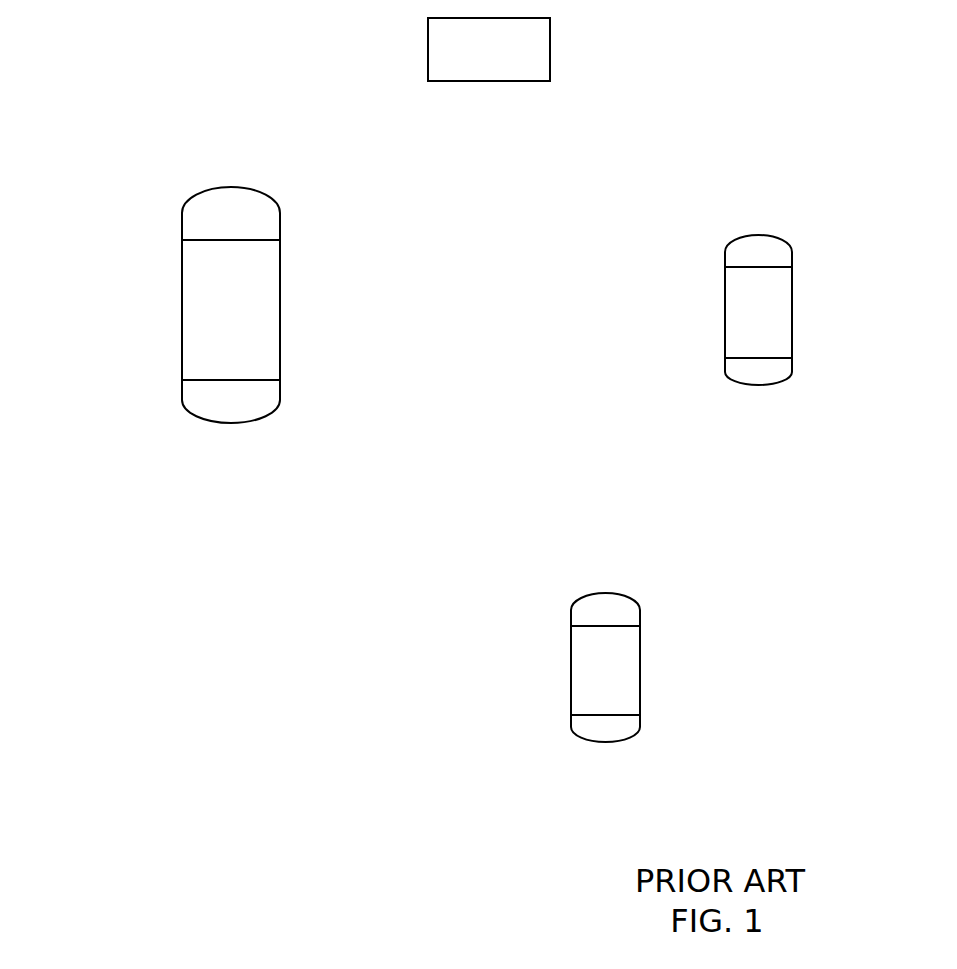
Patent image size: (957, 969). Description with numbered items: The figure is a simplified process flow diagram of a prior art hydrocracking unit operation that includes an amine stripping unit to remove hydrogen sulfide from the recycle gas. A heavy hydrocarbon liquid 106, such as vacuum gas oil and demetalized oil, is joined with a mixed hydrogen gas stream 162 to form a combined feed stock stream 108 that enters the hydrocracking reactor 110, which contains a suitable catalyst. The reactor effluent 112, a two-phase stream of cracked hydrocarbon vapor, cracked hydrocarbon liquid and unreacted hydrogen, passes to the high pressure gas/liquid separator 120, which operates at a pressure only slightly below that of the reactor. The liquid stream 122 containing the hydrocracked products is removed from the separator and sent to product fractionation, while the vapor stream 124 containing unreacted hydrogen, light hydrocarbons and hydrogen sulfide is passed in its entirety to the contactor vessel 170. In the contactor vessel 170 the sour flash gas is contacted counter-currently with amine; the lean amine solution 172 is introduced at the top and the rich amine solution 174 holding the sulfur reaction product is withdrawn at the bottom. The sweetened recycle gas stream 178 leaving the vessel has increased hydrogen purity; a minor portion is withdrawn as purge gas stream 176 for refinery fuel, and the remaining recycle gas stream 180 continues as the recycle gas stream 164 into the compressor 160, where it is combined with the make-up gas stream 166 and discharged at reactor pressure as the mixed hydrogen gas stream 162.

The heavy hydrocarbon liquid 106 is at (232, 55).
The combined feed stock stream 108 is at (232, 55).
The hydrocracking reactor 110 is at (207, 319).
The reactor effluent 112 is at (571, 669).
The high pressure gas/liquid separator 120 is at (582, 683).
The liquid stream 122 is at (742, 770).
The vapor stream 124 is at (640, 608).
The compressor 160 is at (466, 63).
The mixed hydrogen gas stream 162 is at (428, 55).
The recycle gas stream 164 is at (758, 56).
The make-up gas stream 166 is at (932, 57).
The contactor vessel 170 is at (735, 324).
The lean amine solution 172 is at (938, 252).
The rich amine solution 174 is at (758, 385).
The purge gas stream 176 is at (758, 149).
The sweetened recycle gas stream 178 is at (758, 149).
The remaining recycle gas stream 180 is at (758, 57).